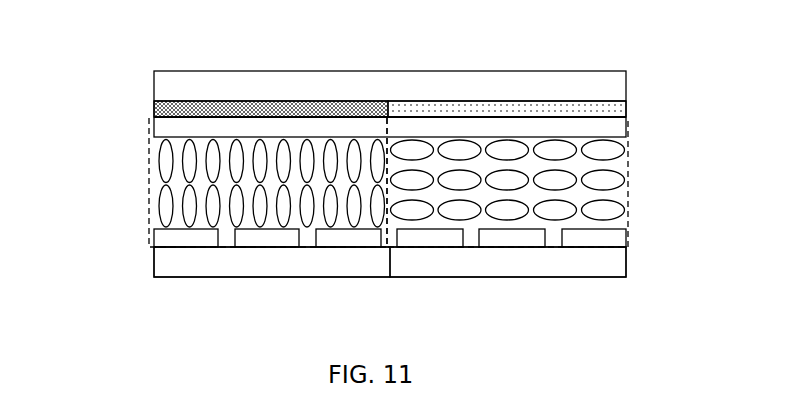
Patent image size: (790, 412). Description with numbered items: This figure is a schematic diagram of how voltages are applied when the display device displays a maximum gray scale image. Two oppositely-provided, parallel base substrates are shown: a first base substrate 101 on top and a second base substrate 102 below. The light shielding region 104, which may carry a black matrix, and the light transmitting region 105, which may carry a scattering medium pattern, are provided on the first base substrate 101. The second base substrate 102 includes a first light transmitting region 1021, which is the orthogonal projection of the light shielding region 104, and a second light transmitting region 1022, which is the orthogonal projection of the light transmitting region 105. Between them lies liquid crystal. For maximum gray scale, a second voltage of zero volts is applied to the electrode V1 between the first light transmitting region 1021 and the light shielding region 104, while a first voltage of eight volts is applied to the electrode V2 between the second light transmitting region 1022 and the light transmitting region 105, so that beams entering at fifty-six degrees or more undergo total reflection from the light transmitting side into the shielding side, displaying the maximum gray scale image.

The first base substrate 101 is at (150, 83).
The second base substrate 102 is at (150, 265).
The light shielding region 104 is at (271, 69).
The light transmitting region 105 is at (515, 69).
The electrode V1 is at (145, 182).
The electrode V2 is at (632, 188).
The first light transmitting region 1021 is at (266, 285).
The second light transmitting region 1022 is at (519, 288).